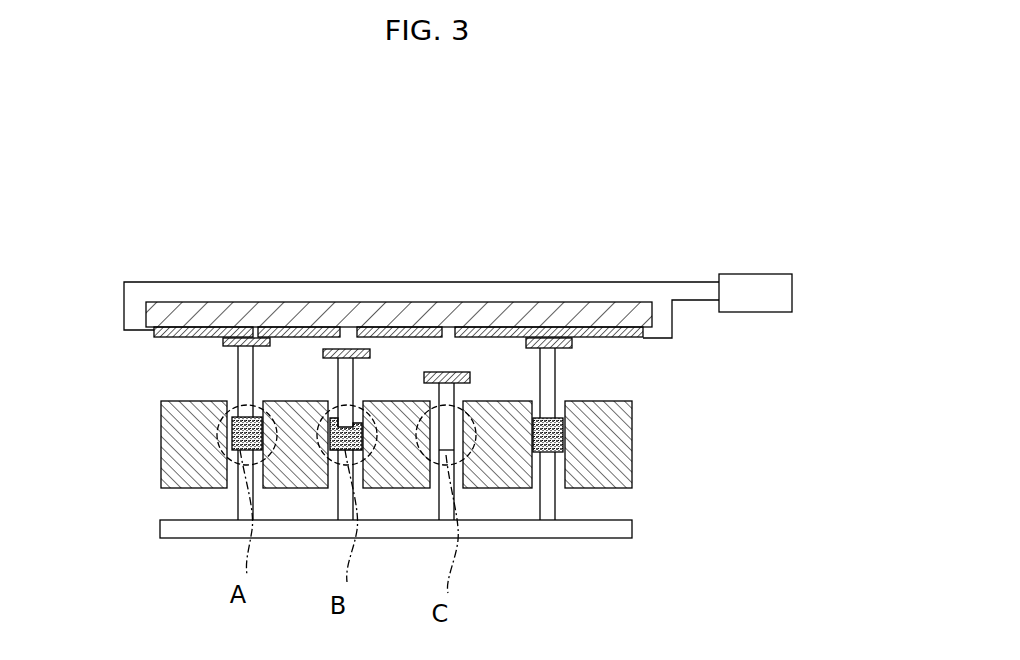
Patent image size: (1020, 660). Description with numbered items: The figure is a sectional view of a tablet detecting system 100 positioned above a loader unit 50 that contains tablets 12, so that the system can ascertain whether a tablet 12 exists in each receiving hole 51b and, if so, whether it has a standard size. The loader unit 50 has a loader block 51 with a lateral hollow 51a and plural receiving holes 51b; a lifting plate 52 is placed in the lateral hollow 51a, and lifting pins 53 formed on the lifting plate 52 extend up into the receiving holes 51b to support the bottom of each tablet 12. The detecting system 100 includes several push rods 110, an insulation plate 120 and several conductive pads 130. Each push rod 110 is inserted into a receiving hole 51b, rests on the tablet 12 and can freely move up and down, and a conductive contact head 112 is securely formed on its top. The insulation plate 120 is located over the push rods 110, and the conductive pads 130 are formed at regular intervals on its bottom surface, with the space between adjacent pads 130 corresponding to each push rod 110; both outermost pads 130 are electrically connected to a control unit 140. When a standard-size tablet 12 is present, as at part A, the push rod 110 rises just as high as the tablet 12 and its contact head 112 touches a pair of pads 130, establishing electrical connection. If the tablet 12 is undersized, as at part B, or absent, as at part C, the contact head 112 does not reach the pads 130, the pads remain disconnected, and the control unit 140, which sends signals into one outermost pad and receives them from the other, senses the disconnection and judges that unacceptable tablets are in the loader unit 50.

The tablet detecting system 100 is at (724, 182).
The control unit 140 is at (750, 303).
The insulation plate 120 is at (188, 301).
The conductive pads 130 is at (208, 342).
The contact head 112 is at (348, 349).
The push rod 110 is at (348, 382).
The loader unit 50 is at (393, 493).
The loader block 51 is at (622, 470).
The lateral hollow 51a is at (605, 512).
The receiving hole 51b is at (563, 402).
The lifting plate 52 is at (580, 531).
The lifting pin 53 is at (547, 502).
The tablet 12 is at (565, 432).